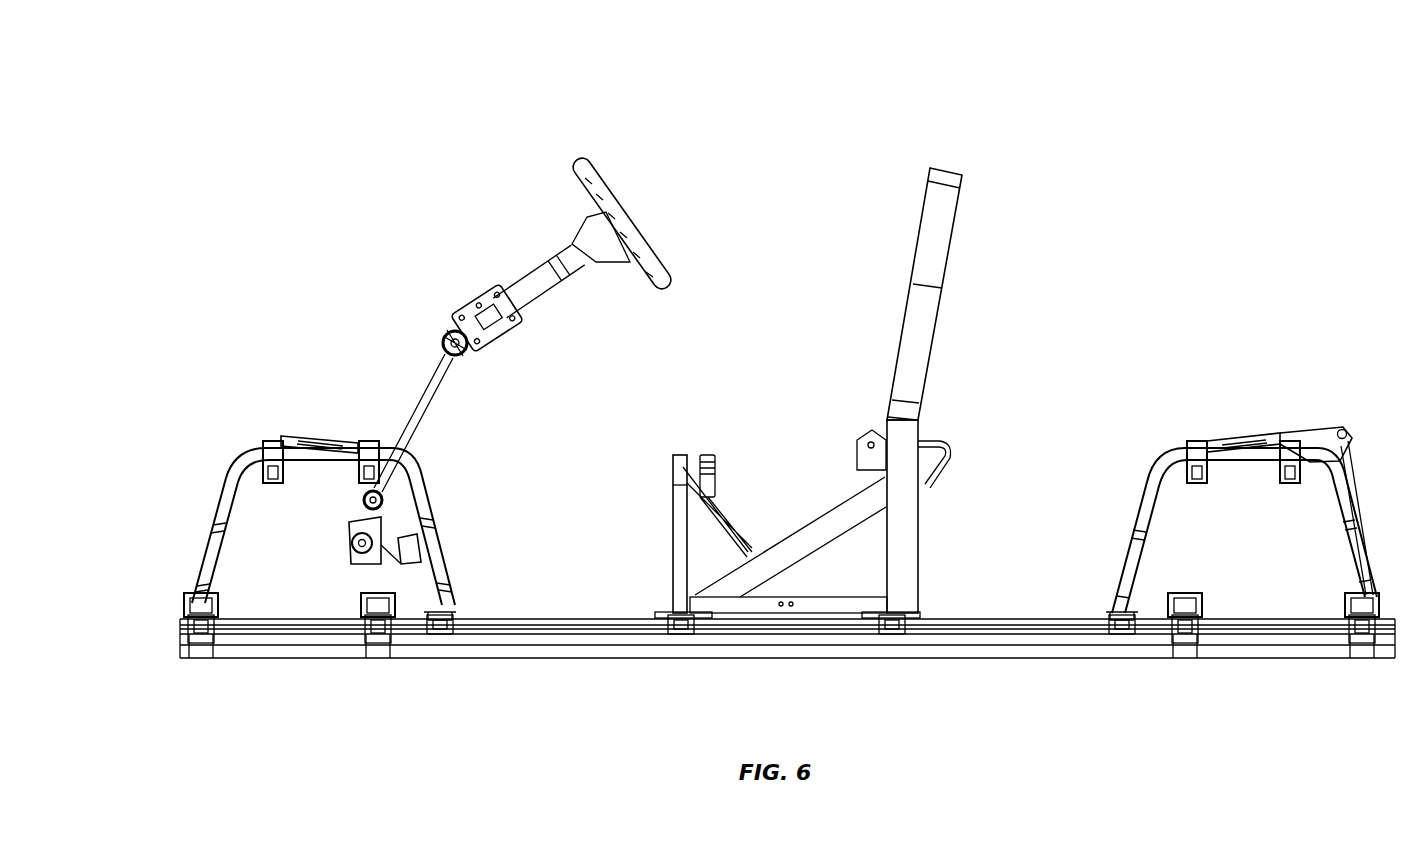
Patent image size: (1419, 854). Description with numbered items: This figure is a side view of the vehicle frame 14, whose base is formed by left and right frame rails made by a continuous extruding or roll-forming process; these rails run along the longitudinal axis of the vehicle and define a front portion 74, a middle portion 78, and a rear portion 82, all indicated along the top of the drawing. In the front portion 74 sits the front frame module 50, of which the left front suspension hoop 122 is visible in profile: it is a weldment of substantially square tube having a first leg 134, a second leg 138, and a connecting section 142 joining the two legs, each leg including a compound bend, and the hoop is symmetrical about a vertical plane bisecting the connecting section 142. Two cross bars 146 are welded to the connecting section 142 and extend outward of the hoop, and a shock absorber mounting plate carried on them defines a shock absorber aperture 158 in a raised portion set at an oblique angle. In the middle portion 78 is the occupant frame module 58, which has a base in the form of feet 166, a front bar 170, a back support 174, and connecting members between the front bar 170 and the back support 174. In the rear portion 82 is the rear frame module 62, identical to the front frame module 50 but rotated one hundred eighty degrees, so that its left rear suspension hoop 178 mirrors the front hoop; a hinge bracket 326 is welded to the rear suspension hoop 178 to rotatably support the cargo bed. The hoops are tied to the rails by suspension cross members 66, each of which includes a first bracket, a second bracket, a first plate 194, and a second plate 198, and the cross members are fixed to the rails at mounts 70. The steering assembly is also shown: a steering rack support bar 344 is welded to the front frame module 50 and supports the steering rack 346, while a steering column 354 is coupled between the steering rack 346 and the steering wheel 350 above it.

The frame 14 is at (430, 141).
The front frame module 50 is at (380, 426).
The occupant frame module 58 is at (787, 343).
The rear frame module 62 is at (1271, 418).
The suspension cross member 66 is at (230, 599).
The mount 70 is at (205, 630).
The front portion 74 is at (173, 378).
The middle portion 78 is at (680, 170).
The rear portion 82 is at (1115, 378).
The left front suspension hoop 122 is at (203, 569).
The first leg 134 is at (217, 527).
The second leg 138 is at (423, 537).
The connecting section 142 is at (268, 449).
The cross bar 146 is at (246, 456).
The shock absorber aperture 158 is at (322, 437).
The feet 166 is at (658, 613).
The front bar 170 is at (688, 458).
The back support 174 is at (914, 346).
The left rear suspension hoop 178 is at (1133, 553).
The first plate 194 is at (190, 645).
The second plate 198 is at (214, 645).
The hinge bracket 326 is at (1338, 426).
The steering rack support bar 344 is at (414, 528).
The steering rack 346 is at (346, 524).
The steering wheel 350 is at (602, 190).
The steering column 354 is at (437, 385).